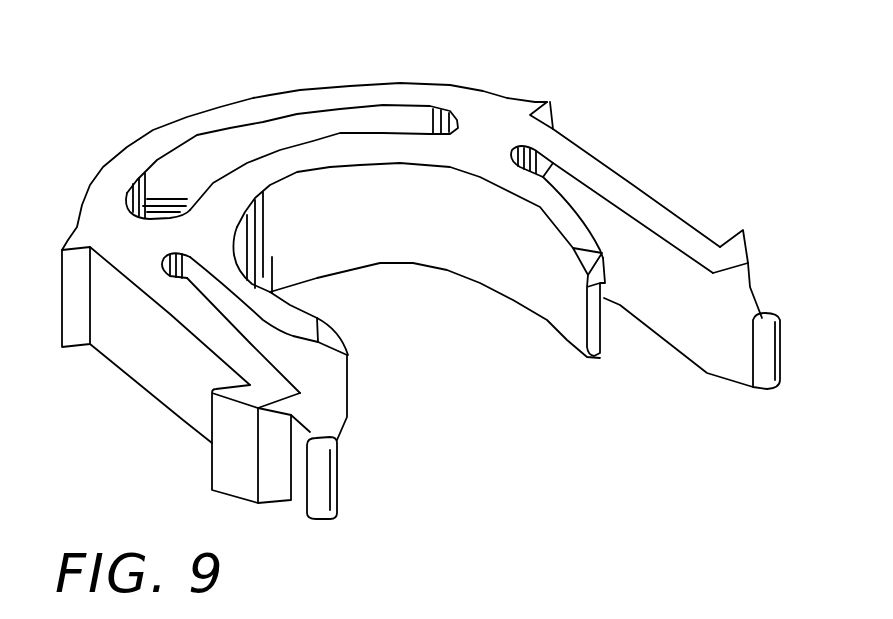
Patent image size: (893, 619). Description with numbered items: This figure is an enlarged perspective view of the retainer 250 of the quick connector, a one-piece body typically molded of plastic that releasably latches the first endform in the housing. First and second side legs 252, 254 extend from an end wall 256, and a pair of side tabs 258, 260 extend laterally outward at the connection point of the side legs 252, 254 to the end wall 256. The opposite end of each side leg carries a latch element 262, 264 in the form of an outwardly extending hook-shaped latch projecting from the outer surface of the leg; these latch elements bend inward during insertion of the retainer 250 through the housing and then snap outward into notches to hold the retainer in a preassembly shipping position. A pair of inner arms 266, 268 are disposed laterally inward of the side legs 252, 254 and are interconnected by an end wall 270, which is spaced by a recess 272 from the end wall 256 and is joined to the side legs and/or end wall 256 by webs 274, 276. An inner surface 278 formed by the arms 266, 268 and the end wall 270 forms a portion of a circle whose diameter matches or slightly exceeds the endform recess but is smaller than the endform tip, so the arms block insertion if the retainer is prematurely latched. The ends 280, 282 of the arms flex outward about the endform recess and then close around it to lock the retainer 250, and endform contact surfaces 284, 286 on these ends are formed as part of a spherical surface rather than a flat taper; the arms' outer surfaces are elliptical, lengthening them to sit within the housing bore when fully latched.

The retainer 250 is at (305, 36).
The first side leg 252 is at (170, 310).
The second side leg 254 is at (625, 193).
The end wall 256 is at (219, 108).
The side tab 258 is at (70, 320).
The side tab 260 is at (552, 102).
The latch element 262 is at (223, 470).
The latch element 264 is at (743, 228).
The inner arm 266 is at (285, 310).
The inner arm 268 is at (548, 185).
The end wall 270 is at (283, 190).
The recess 272 is at (353, 113).
The web 274 is at (128, 232).
The web 276 is at (472, 138).
The inner surface 278 is at (440, 247).
The end of arm 280 is at (350, 417).
The end of arm 282 is at (607, 357).
The endform contact surface 284 is at (348, 345).
The endform contact surface 286 is at (612, 300).